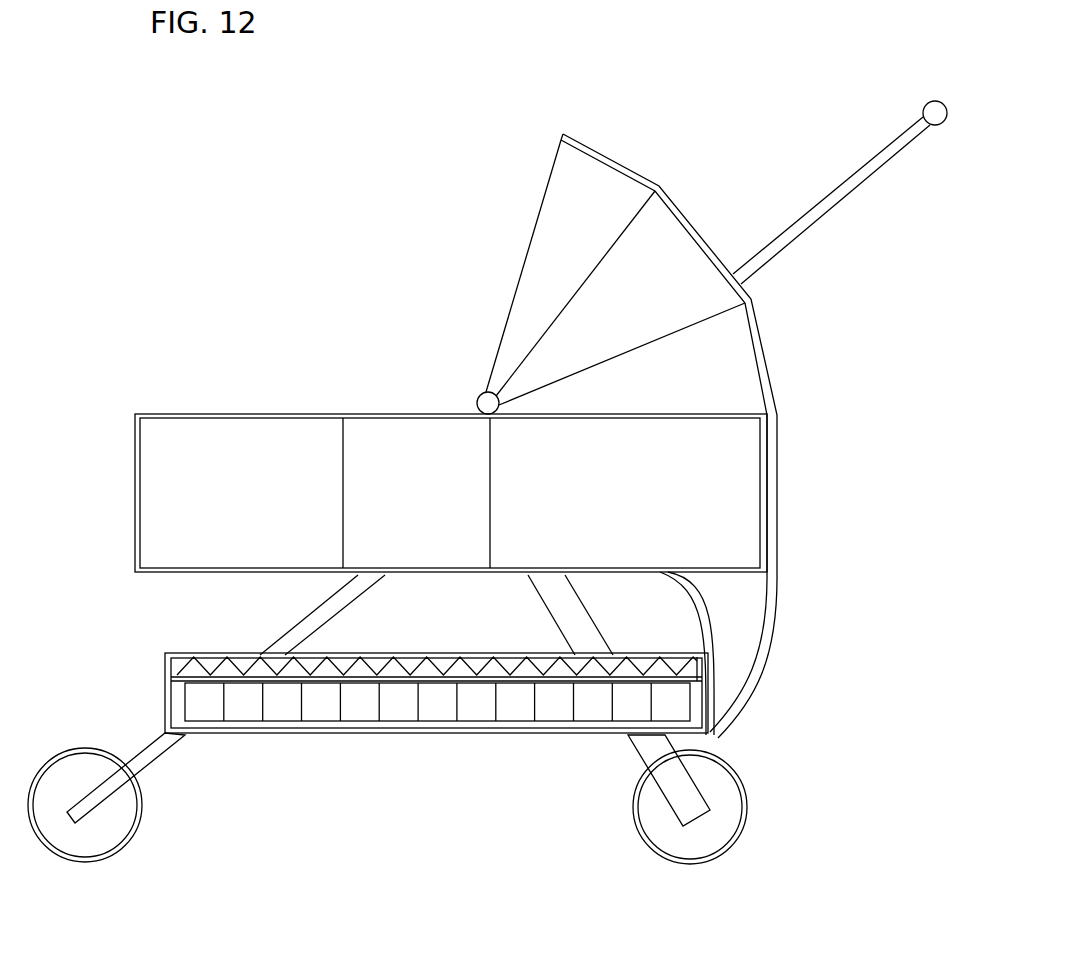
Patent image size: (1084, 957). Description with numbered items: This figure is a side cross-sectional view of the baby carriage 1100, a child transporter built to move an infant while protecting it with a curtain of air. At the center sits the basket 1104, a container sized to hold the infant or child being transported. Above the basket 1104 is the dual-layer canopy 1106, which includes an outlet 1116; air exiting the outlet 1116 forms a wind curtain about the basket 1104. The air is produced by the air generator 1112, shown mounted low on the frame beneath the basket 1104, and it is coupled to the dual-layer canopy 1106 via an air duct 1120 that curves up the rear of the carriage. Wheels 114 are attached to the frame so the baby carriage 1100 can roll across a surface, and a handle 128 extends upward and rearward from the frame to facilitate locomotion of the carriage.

The baby carriage 1100 is at (362, 104).
The basket 1104 is at (132, 454).
The dual-layer canopy 1106 is at (660, 176).
The outlet 1116 is at (560, 139).
The handle 128 is at (928, 100).
The air duct 1120 is at (763, 650).
The air generator 1112 is at (158, 705).
The wheels 114 is at (142, 812).